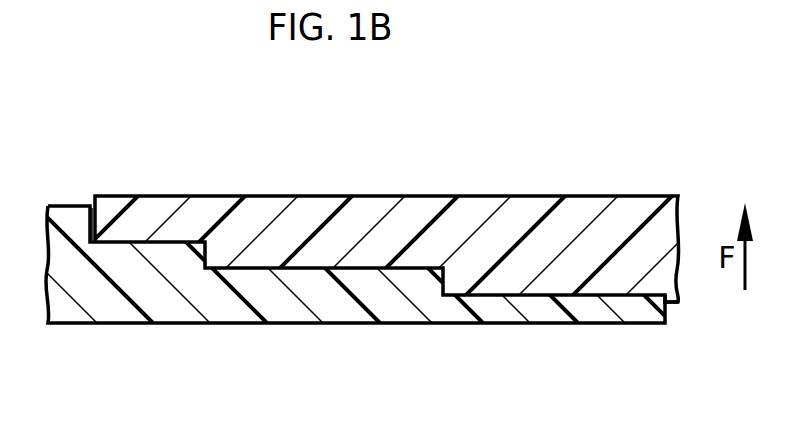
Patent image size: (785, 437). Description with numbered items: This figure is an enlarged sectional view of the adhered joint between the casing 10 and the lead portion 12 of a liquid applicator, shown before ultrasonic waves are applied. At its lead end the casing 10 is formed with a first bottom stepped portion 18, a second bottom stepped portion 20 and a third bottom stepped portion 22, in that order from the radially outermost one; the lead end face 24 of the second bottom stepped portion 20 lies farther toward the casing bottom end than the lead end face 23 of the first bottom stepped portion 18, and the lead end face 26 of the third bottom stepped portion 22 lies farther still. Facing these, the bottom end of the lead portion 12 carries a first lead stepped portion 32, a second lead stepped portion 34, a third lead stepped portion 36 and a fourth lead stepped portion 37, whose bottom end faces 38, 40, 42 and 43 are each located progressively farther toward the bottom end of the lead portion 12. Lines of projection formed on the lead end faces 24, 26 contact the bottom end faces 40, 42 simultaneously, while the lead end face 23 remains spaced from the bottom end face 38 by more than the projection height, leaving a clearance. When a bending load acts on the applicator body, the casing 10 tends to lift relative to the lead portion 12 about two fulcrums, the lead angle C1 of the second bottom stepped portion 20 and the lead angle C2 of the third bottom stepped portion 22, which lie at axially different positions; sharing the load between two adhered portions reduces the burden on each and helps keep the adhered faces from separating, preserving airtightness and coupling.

The casing 10 is at (538, 188).
The lead portion 12 is at (122, 332).
The first bottom stepped portion 18 is at (105, 212).
The second bottom stepped portion 20 is at (330, 260).
The third bottom stepped portion 22 is at (545, 290).
The lead end face of the first bottom stepped portion 23 is at (78, 204).
The lead end face of the second bottom stepped portion 24 is at (172, 241).
The lead end face of the third bottom stepped portion 26 is at (440, 282).
The first lead stepped portion 32 is at (62, 204).
The second lead stepped portion 34 is at (178, 262).
The third lead stepped portion 36 is at (324, 288).
The fourth lead stepped portion 37 is at (597, 308).
The bottom end face of the first lead stepped portion 38 is at (93, 302).
The bottom end face of the second lead stepped portion 40 is at (207, 258).
The bottom end face of the third lead stepped portion 42 is at (468, 282).
The bottom end face of the fourth lead stepped portion 43 is at (670, 303).
The lead angle of the second bottom stepped portion C1 is at (205, 268).
The lead angle of the third bottom stepped portion C2 is at (443, 296).